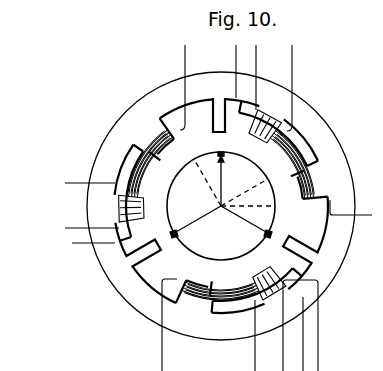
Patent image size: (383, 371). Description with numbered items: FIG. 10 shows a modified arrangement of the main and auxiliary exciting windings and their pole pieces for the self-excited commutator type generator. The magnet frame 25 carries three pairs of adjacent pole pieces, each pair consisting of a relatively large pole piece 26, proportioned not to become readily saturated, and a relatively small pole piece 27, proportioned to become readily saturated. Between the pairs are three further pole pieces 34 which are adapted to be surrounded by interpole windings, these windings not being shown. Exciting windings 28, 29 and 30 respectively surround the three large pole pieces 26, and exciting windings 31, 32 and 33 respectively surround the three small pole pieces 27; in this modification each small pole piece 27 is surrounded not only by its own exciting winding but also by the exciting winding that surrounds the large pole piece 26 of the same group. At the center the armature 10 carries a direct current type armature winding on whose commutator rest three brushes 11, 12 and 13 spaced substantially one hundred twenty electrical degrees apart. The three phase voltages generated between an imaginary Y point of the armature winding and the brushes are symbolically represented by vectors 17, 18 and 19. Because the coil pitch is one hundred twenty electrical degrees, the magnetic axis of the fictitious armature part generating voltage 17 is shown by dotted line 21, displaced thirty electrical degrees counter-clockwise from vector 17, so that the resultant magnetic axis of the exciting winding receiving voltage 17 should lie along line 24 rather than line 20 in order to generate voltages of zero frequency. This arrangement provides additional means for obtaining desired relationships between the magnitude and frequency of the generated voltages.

The rotor 10 is at (172, 195).
The brush 11 is at (230, 152).
The brush 12 is at (270, 240).
The brush 13 is at (173, 240).
The voltage vector 17 is at (222, 172).
The voltage vector 18 is at (189, 226).
The voltage vector 19 is at (254, 226).
The resultant magnetic axis line 20 is at (252, 206).
The magnetic axis dotted line 21 is at (209, 186).
The resultant magnetic axis line 24 is at (248, 189).
The magnet frame 25 is at (163, 92).
The large pole piece 26 is at (161, 159).
The small pole piece 27 is at (262, 140).
The exciting winding 28 is at (318, 190).
The exciting winding 29 is at (207, 306).
The exciting winding 30 is at (159, 136).
The exciting winding 31 is at (271, 110).
The exciting winding 32 is at (266, 288).
The exciting winding 33 is at (117, 211).
The interpole pole piece 34 is at (216, 124).